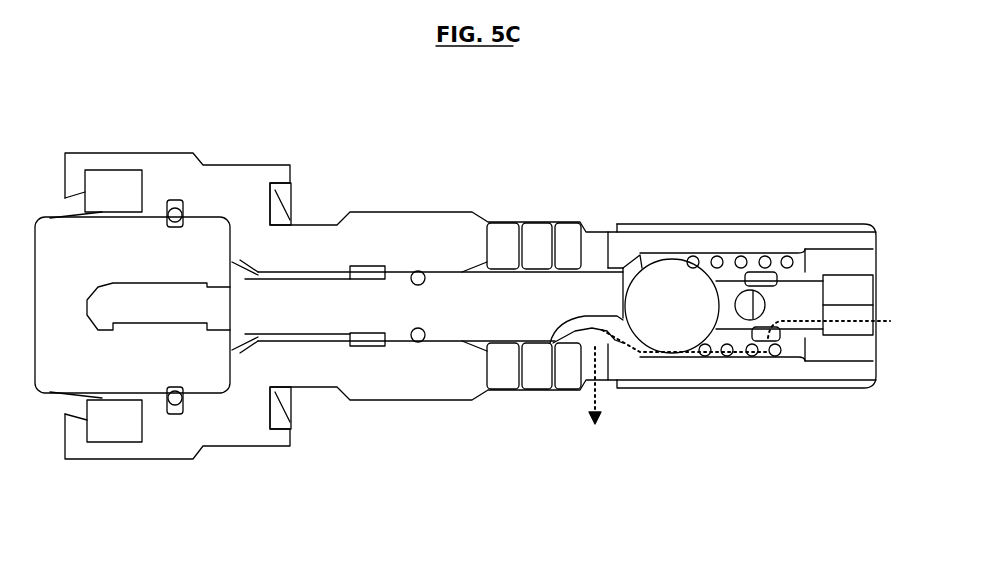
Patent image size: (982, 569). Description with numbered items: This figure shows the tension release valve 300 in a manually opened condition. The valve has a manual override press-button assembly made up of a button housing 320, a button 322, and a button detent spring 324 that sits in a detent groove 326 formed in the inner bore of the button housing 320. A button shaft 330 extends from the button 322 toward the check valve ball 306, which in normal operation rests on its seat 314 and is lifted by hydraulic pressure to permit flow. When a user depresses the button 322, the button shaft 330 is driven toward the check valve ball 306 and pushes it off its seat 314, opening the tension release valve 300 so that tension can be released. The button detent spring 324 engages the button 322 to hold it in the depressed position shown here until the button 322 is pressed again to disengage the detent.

The tension release valve 300 is at (824, 144).
The check valve ball 306 is at (670, 293).
The seat 314 is at (618, 252).
The button housing 320 is at (363, 228).
The button 322 is at (92, 378).
The button detent spring 324 is at (177, 408).
The detent groove 326 is at (188, 188).
The button shaft 330 is at (445, 287).